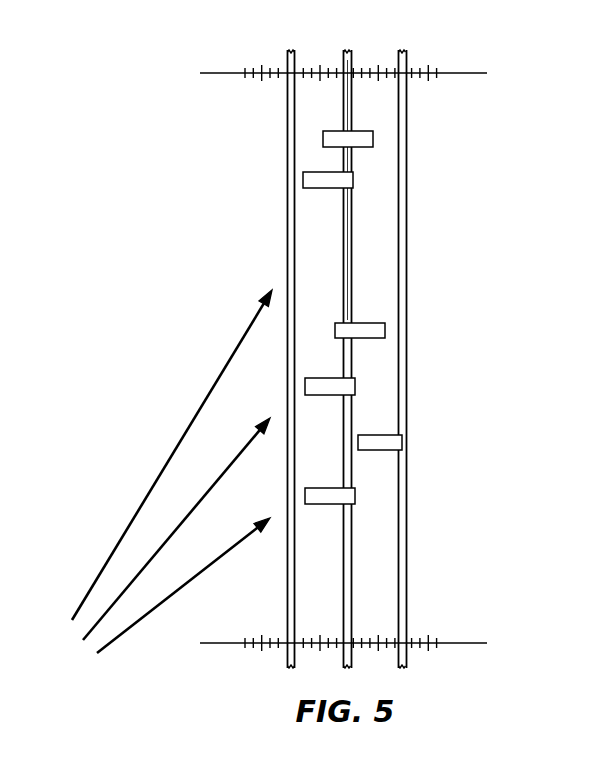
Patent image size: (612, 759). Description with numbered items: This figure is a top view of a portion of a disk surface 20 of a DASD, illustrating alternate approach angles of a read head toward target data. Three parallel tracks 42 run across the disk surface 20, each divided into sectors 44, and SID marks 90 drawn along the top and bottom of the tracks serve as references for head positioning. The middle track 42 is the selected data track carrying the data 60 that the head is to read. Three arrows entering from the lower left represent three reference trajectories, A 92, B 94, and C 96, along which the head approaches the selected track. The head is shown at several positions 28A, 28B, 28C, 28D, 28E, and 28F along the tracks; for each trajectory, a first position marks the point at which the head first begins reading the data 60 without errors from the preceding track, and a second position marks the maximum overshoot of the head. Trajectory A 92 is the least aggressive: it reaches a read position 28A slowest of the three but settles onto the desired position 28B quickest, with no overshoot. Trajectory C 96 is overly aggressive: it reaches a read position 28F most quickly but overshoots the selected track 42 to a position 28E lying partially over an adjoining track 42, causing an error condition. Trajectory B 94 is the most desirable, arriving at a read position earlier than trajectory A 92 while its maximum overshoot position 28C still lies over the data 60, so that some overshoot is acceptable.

The disk surface 20 is at (352, 345).
The tracks 42 is at (295, 57).
The sectors 44 is at (374, 345).
The data 60 is at (347, 300).
The head position 28A is at (373, 143).
The head position 28B is at (353, 183).
The head position 28C is at (385, 331).
The head position 28D is at (355, 392).
The head position 28E is at (402, 445).
The head position 28F is at (355, 502).
The SID marks 90 is at (458, 643).
The reference trajectory A 92 is at (145, 495).
The reference trajectory B 94 is at (206, 496).
The reference trajectory C 96 is at (230, 551).